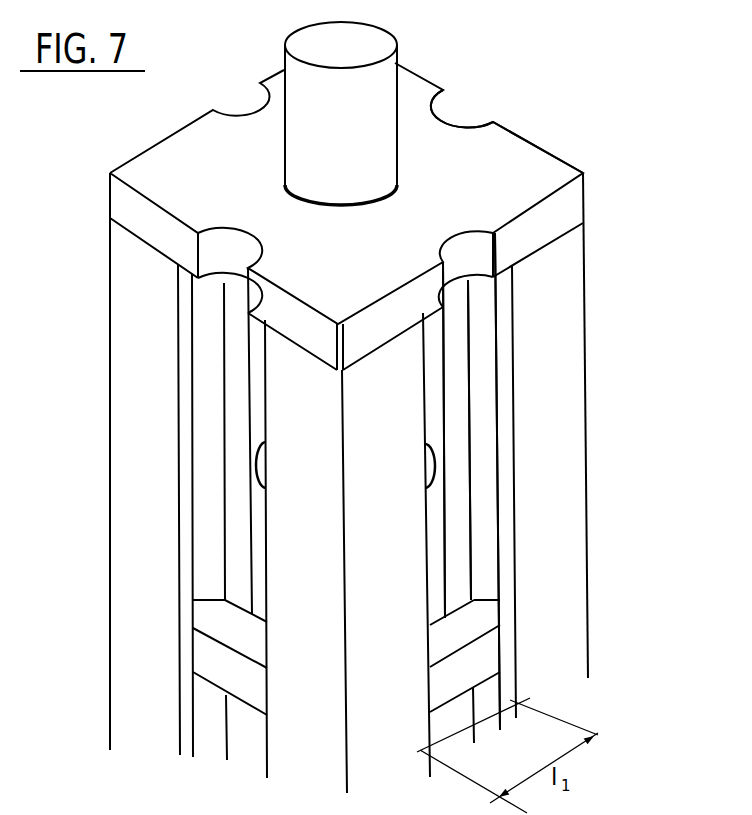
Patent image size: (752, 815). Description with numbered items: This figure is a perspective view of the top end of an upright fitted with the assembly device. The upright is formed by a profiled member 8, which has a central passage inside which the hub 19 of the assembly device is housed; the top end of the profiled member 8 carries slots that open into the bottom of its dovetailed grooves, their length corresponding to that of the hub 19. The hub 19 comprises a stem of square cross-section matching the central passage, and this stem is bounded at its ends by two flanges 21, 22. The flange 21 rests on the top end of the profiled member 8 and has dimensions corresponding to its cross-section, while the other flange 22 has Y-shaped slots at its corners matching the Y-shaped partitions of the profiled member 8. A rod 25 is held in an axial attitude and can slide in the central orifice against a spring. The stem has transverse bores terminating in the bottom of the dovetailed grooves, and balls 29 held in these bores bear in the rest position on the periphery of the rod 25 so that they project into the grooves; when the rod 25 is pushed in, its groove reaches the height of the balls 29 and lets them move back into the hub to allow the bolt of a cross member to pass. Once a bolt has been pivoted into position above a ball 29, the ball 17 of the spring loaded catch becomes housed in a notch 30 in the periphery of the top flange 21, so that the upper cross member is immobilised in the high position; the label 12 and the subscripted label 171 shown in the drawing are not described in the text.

The profiled member 8 is at (132, 358).
The column 12 is at (105, 585).
The ball 17 is at (486, 513).
The leg portion 171 is at (547, 660).
The hub 19 is at (122, 158).
The flange 21 is at (428, 115).
The flange 22 is at (210, 656).
The rod 25 is at (368, 44).
The ball 29 is at (260, 470).
The notch 30 is at (465, 115).